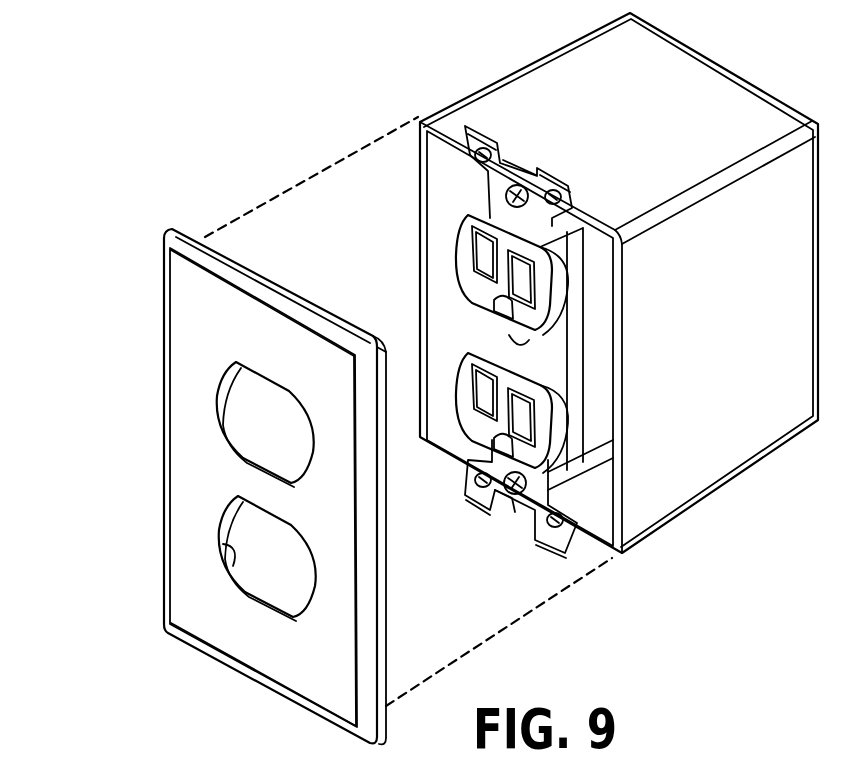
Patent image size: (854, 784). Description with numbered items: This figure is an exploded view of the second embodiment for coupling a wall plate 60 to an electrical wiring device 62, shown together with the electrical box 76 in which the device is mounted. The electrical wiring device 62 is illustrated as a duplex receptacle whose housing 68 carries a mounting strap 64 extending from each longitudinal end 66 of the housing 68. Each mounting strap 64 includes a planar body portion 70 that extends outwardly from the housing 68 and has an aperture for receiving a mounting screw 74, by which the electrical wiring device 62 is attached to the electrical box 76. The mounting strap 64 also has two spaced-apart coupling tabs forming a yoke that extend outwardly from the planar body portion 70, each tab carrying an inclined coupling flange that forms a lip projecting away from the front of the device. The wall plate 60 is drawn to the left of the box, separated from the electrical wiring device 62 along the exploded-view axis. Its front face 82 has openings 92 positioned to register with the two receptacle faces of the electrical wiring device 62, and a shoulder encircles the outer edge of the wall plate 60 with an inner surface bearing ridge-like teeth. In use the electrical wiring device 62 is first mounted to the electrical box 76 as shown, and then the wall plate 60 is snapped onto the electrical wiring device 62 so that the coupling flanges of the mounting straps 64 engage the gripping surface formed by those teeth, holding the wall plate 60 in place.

The wall plate 60 is at (163, 325).
The electrical wiring device 62 is at (566, 272).
The mounting strap 64 is at (491, 191).
The longitudinal end 66 is at (588, 463).
The housing 68 is at (595, 355).
The planar body portion 70 is at (505, 188).
The mounting screw 74 is at (498, 500).
The electrical box 76 is at (735, 70).
The front face 82 is at (190, 462).
The openings 92 is at (235, 546).